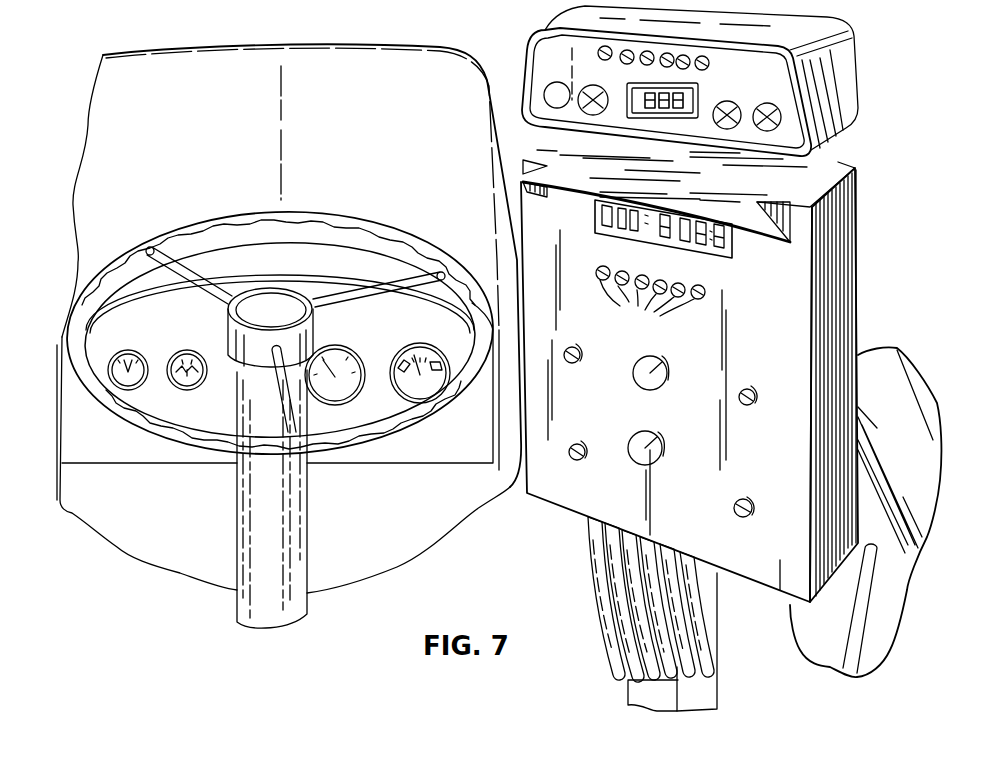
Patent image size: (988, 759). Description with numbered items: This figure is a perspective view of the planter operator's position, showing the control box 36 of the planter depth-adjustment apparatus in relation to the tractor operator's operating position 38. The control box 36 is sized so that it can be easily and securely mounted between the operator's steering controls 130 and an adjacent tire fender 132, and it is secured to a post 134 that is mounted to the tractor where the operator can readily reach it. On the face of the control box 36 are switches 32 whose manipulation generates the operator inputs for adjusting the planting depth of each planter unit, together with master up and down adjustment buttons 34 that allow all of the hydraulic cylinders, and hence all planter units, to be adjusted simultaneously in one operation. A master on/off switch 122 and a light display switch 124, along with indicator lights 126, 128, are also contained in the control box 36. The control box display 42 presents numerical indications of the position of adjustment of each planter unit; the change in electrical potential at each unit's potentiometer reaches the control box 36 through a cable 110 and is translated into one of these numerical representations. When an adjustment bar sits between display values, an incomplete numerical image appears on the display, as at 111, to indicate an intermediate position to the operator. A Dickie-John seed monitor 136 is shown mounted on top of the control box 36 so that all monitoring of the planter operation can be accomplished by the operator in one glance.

The tractor operator's operating position 38 is at (395, 72).
The operator's steering controls 130 is at (360, 222).
The Dickie-John seed monitor 136 is at (766, 91).
The control box 36 is at (866, 256).
The control box display 42 is at (725, 258).
The incomplete numerical image 111 is at (630, 213).
The switches 32 is at (650, 299).
The master up and down adjustment buttons 34 is at (648, 386).
The indicator light 128 is at (570, 340).
The light display switch 124 is at (574, 446).
The indicator light 126 is at (746, 406).
The master on/off switch 122 is at (742, 518).
The cable 110 is at (704, 608).
The post 134 is at (716, 697).
The tire fender 132 is at (915, 441).